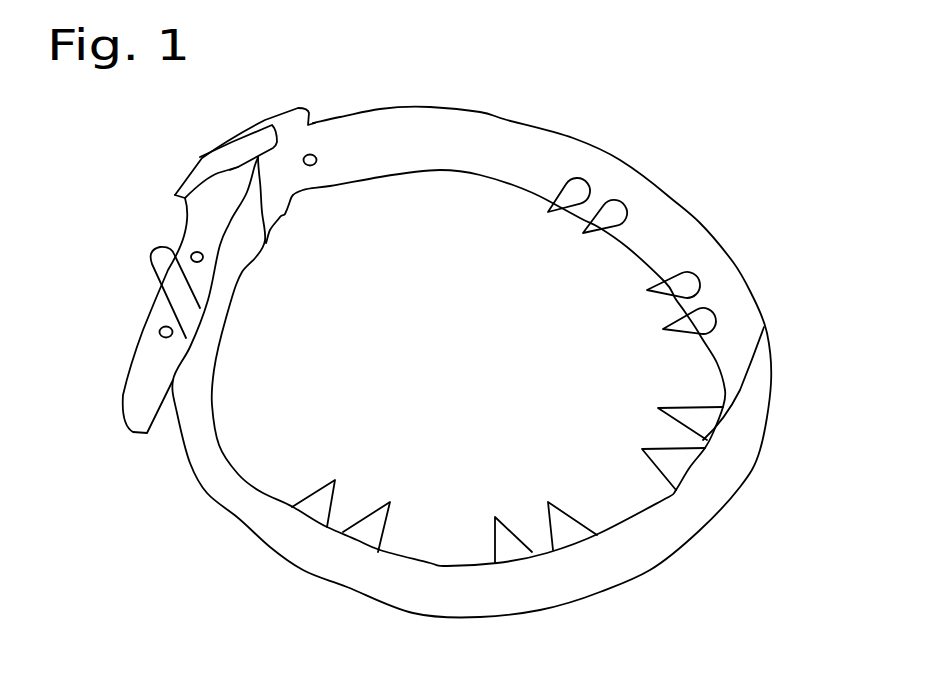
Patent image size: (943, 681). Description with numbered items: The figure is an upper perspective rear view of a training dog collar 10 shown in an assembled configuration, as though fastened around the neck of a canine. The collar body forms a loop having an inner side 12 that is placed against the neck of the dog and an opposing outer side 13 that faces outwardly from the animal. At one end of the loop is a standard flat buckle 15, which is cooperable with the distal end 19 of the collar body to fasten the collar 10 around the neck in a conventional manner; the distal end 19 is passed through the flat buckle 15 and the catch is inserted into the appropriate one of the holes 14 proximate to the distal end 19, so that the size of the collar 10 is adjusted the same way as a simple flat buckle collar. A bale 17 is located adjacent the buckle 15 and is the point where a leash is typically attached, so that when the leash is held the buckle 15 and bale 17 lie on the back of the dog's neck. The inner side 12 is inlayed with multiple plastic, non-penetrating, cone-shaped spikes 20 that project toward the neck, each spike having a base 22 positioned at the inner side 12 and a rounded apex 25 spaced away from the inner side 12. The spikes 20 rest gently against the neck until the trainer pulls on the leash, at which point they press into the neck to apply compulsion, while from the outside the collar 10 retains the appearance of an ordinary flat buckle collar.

The training dog collar 10 is at (472, 329).
The inner side 12 is at (510, 160).
The outer side 13 is at (640, 557).
The holes 14 is at (159, 334).
The flat buckle 15 is at (210, 167).
The bale 17 is at (157, 272).
The distal end 19 is at (145, 418).
The spikes 20 is at (615, 212).
The base 22 is at (717, 323).
The apex 25 is at (663, 329).